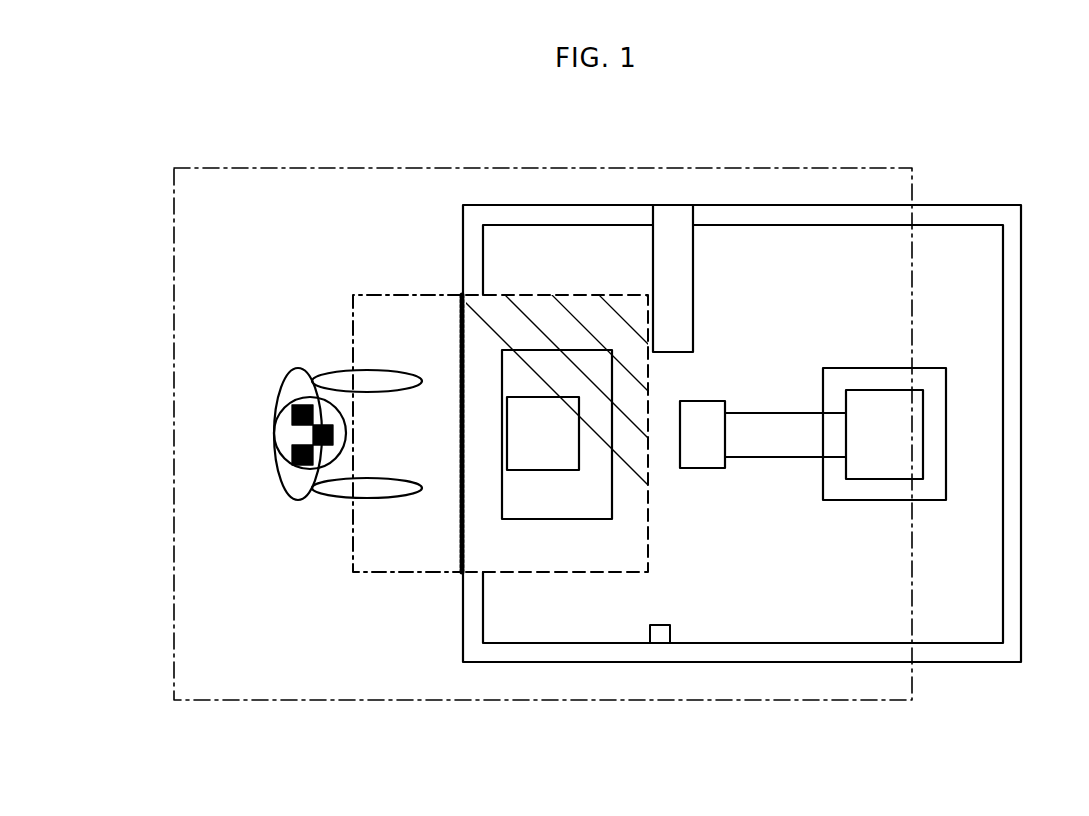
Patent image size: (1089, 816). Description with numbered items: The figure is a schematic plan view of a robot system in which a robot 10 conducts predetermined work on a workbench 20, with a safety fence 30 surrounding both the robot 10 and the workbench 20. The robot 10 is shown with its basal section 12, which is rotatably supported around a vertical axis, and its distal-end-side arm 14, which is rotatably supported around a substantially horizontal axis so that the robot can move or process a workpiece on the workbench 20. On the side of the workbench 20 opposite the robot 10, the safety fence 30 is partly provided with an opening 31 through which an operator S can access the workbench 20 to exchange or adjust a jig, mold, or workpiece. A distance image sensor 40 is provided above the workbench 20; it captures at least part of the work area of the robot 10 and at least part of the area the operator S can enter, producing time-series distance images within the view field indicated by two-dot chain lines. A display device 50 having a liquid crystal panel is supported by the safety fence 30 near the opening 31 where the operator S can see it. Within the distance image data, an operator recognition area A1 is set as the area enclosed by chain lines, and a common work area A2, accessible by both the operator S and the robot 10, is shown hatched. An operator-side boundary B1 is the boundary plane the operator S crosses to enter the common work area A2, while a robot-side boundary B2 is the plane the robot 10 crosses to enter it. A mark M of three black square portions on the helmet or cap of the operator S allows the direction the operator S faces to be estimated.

The robot 10 is at (878, 489).
The basal section 12 is at (946, 430).
The distal-end-side arm 14 is at (784, 457).
The workbench 20 is at (542, 520).
The safety fence 30 is at (965, 663).
The opening 31 is at (478, 312).
The distance image sensor 40 is at (557, 395).
The display device 50 is at (693, 272).
The operator S is at (300, 368).
The mark M is at (298, 452).
The operator recognition area A1 is at (355, 540).
The common work area A2 is at (640, 520).
The operator-side boundary B1 is at (463, 540).
The robot-side boundary B2 is at (597, 573).